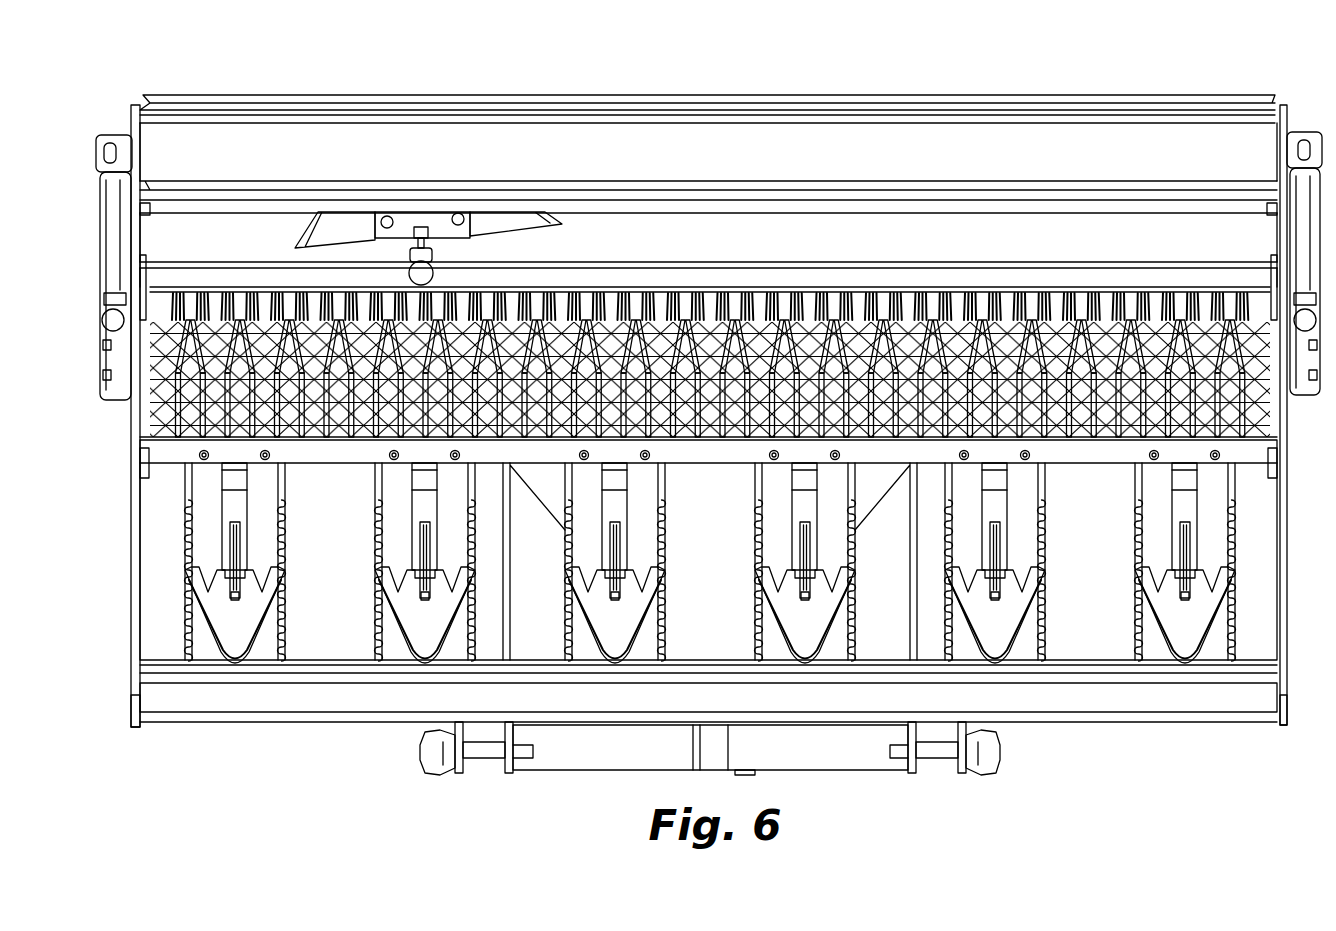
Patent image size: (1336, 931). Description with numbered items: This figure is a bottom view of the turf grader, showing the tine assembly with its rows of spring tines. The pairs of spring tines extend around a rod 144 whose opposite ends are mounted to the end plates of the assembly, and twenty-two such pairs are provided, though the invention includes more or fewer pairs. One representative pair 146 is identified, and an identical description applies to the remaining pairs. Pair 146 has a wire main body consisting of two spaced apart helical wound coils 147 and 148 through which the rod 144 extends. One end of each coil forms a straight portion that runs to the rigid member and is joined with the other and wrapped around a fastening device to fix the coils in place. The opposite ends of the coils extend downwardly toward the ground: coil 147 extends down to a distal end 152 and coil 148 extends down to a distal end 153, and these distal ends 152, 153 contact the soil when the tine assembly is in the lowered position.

The rod 144 is at (782, 300).
The pair of spring tines 146 is at (610, 272).
The helical wound coil 147 is at (612, 289).
The helical wound coil 148 is at (650, 290).
The distal end 152 is at (620, 437).
The distal end 153 is at (645, 437).